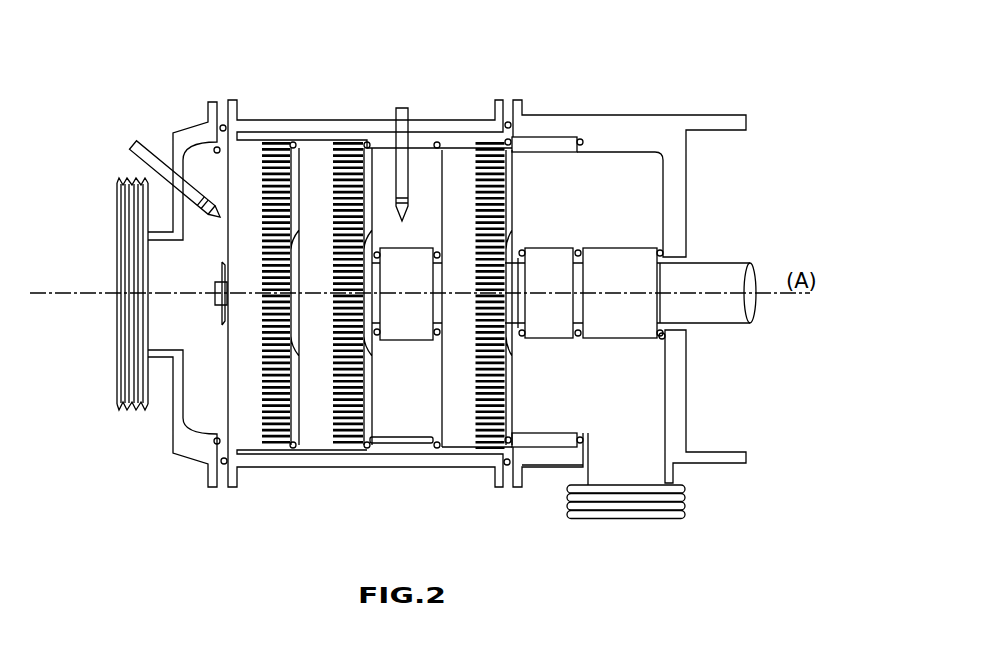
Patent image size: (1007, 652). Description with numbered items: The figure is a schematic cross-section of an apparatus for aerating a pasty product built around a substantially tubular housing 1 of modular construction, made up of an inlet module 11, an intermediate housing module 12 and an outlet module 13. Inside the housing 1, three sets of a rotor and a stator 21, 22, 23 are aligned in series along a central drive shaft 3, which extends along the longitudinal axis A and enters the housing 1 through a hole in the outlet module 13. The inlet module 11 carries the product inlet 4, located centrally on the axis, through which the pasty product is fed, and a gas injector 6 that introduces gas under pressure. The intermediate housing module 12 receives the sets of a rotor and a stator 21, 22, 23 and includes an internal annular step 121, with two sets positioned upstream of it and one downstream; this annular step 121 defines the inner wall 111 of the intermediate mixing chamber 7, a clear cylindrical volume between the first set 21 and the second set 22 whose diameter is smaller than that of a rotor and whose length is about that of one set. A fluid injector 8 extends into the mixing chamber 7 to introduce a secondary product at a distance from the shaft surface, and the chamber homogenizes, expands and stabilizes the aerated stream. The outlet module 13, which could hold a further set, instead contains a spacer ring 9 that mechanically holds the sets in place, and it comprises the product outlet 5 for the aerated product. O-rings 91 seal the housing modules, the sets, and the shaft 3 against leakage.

The housing 1 is at (663, 130).
The central drive shaft 3 is at (715, 275).
The product inlet 4 is at (118, 238).
The product outlet 5 is at (620, 518).
The gas injector 6 is at (140, 145).
The intermediate mixing chamber 7 is at (402, 433).
The fluid injector 8 is at (392, 150).
The spacer ring 9 is at (533, 447).
The inlet module 11 is at (180, 447).
The intermediate housing module 12 is at (300, 462).
The outlet module 13 is at (673, 397).
The first set of a rotor and a stator 21 is at (310, 150).
The second set of a rotor and a stator 22 is at (470, 150).
The third set of a rotor and a stator 23 is at (250, 150).
The O-rings 91 is at (505, 128).
The inner wall 111 is at (370, 435).
The internal annular step 121 is at (424, 447).